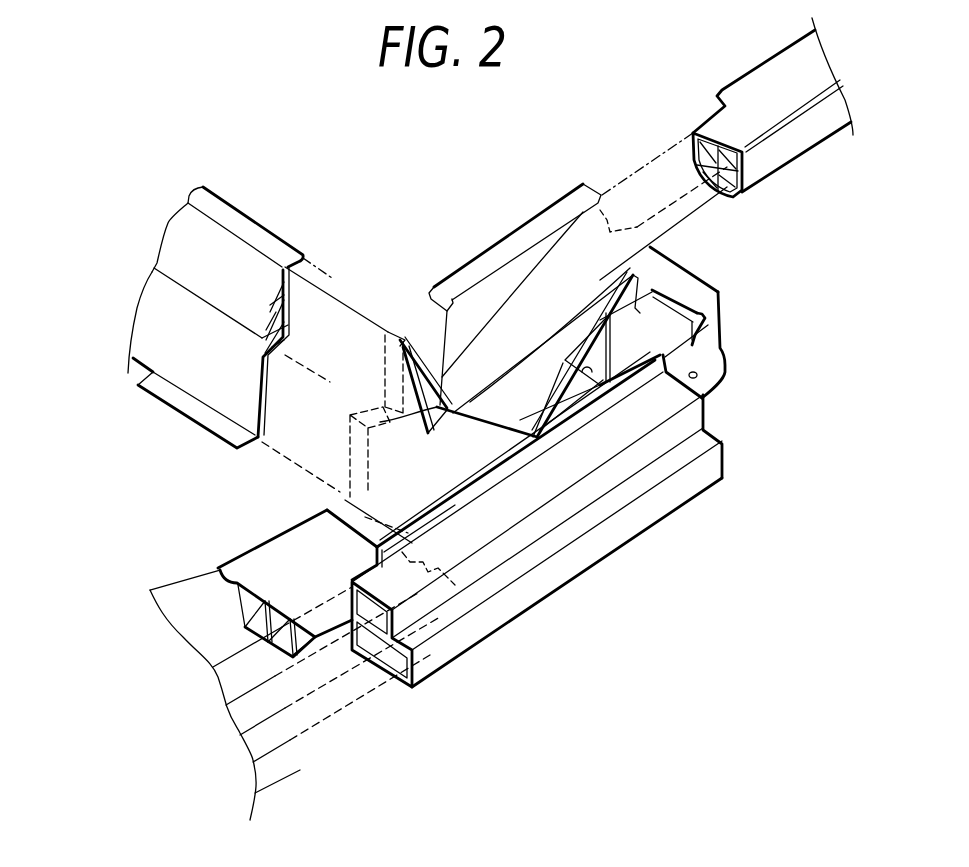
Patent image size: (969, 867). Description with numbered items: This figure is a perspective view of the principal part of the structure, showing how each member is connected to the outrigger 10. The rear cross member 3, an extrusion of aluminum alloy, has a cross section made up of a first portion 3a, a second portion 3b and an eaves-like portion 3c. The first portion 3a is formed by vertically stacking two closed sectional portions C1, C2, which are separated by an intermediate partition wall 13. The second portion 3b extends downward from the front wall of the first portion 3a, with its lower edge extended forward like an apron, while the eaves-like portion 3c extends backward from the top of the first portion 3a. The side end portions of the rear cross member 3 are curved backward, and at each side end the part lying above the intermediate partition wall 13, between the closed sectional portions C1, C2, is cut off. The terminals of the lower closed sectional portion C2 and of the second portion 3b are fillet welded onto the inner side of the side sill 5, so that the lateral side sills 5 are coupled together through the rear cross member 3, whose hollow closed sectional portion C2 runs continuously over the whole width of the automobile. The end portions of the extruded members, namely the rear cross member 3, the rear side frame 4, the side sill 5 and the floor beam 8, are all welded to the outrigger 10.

The rear cross member 3 is at (244, 311).
The first portion 3a is at (172, 232).
The second portion 3b is at (147, 328).
The eaves-like portion 3c is at (262, 240).
The rear side frame 4 is at (762, 70).
The side sill 5 is at (597, 552).
The floor beam 8 is at (267, 557).
The outrigger 10 is at (692, 282).
The intermediate partition wall 13 is at (265, 312).
The closed sectional portion C1 is at (278, 308).
The closed sectional portion C2 is at (277, 333).